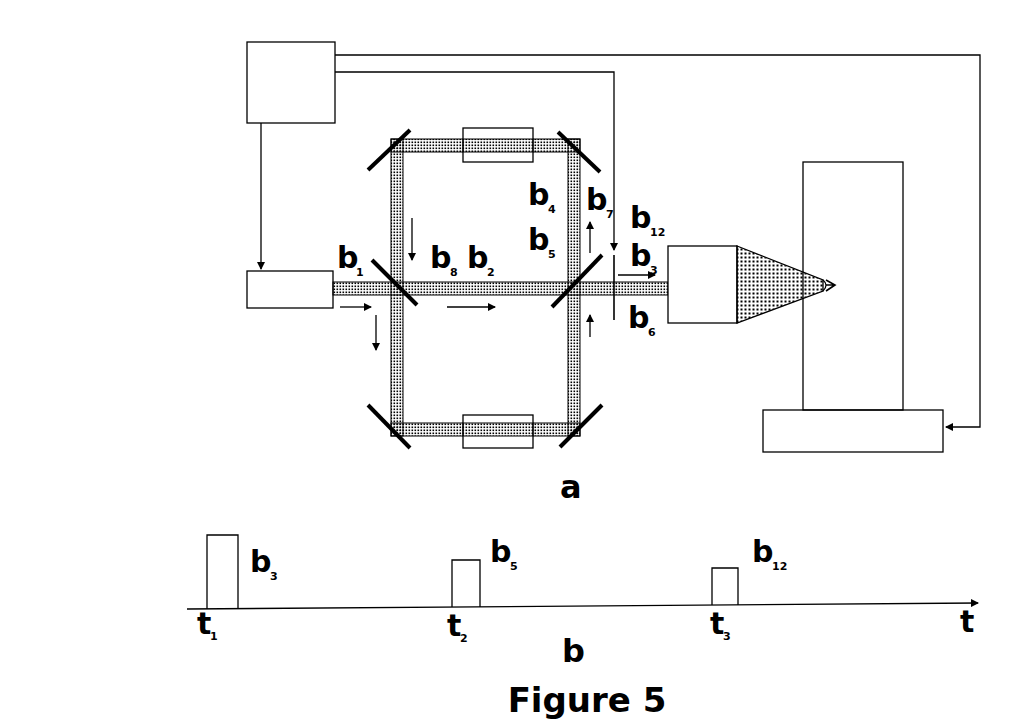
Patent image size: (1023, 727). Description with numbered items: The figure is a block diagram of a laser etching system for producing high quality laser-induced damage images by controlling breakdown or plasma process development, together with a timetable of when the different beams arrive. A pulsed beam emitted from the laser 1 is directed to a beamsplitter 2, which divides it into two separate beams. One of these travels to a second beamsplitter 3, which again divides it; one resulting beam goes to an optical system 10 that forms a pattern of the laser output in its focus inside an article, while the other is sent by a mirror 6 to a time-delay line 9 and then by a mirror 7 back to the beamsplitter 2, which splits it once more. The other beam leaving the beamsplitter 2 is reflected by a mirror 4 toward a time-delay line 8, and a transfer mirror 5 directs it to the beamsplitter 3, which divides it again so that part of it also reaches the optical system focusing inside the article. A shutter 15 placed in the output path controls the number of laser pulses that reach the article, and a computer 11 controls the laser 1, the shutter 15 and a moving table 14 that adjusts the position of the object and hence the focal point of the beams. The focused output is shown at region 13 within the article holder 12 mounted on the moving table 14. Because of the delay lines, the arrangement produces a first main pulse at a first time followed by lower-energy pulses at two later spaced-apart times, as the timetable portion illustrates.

The laser 1 is at (290, 274).
The beamsplitter 2 is at (390, 268).
The beamsplitter 3 is at (580, 269).
The mirror 4 is at (384, 433).
The transfer mirror 5 is at (585, 433).
The mirror 6 is at (579, 137).
The mirror 7 is at (385, 146).
The time-delay line 8 is at (498, 450).
The time-delay line 9 is at (498, 127).
The optical system 10 is at (747, 284).
The computer 11 is at (291, 82).
The sample chamber 12 is at (853, 266).
The focal point 13 is at (852, 286).
The moving table 14 is at (853, 431).
The shutter 15 is at (624, 311).